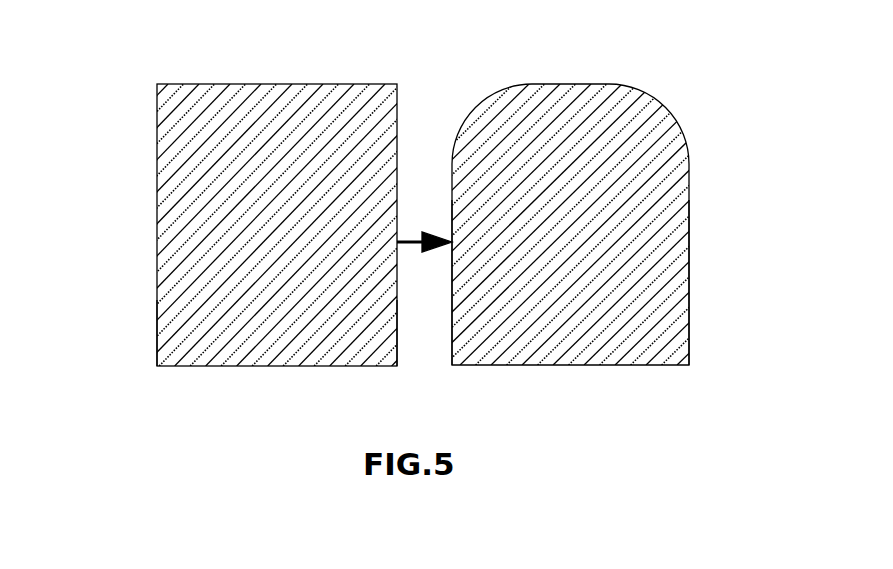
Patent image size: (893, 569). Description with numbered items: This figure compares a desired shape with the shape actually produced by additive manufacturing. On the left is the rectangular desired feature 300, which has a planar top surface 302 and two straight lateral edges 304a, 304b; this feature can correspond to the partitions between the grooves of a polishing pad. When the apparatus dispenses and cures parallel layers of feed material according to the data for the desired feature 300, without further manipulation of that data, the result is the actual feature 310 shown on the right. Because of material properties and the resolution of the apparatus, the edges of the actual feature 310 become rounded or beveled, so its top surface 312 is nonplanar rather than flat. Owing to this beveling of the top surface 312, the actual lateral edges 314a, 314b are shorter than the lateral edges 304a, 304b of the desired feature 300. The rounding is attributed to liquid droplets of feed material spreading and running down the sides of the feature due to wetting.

The desired feature 300 is at (127, 100).
The top surface of the desired feature 302 is at (277, 84).
The lateral edge of the desired feature 304a is at (157, 343).
The lateral edge of the desired feature 304b is at (397, 352).
The actual feature 310 is at (458, 100).
The top surface of the actual feature 312 is at (582, 84).
The actual lateral edge 314a is at (452, 262).
The actual lateral edge 314b is at (689, 277).